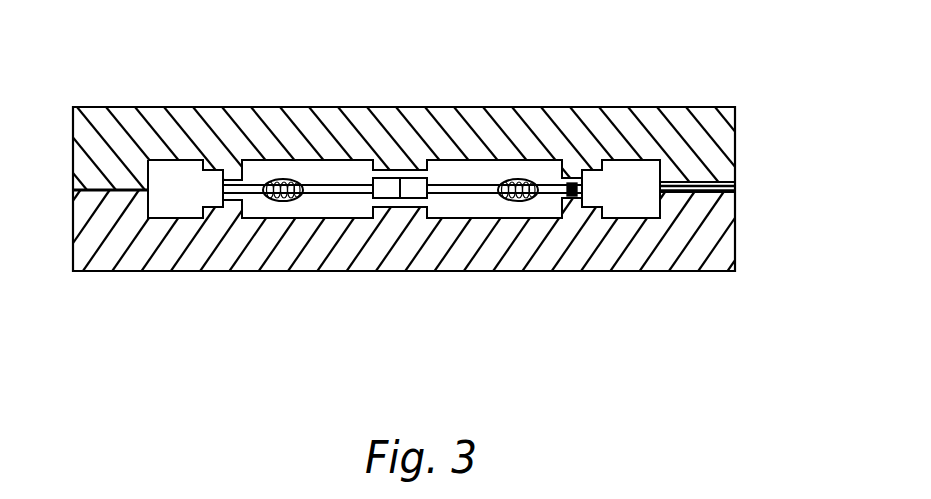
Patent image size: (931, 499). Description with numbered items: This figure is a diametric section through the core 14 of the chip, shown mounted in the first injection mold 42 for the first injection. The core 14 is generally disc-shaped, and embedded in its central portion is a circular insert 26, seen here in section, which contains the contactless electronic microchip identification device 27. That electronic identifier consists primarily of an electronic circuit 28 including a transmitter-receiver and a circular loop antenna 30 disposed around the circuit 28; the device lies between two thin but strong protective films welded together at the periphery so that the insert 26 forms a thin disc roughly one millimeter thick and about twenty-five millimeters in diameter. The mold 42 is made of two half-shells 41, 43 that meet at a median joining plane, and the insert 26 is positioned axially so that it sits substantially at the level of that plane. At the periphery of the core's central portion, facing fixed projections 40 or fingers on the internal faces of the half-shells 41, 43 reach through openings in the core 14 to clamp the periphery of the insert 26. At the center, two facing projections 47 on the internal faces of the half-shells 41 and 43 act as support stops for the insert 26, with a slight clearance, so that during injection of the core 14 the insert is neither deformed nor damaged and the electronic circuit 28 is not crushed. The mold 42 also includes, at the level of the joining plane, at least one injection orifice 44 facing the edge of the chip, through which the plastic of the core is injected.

The core 14 is at (637, 178).
The circular insert 26 is at (320, 197).
The contactless electronic microchip identification device 27 is at (480, 190).
The electronic circuit 28 is at (417, 190).
The circular loop antenna 30 is at (527, 201).
The projections 40 is at (237, 173).
The half-shell 41 is at (105, 130).
The first injection mold 42 is at (265, 90).
The half-shell 43 is at (105, 250).
The injection orifice 44 is at (735, 190).
The projections 47 is at (402, 165).